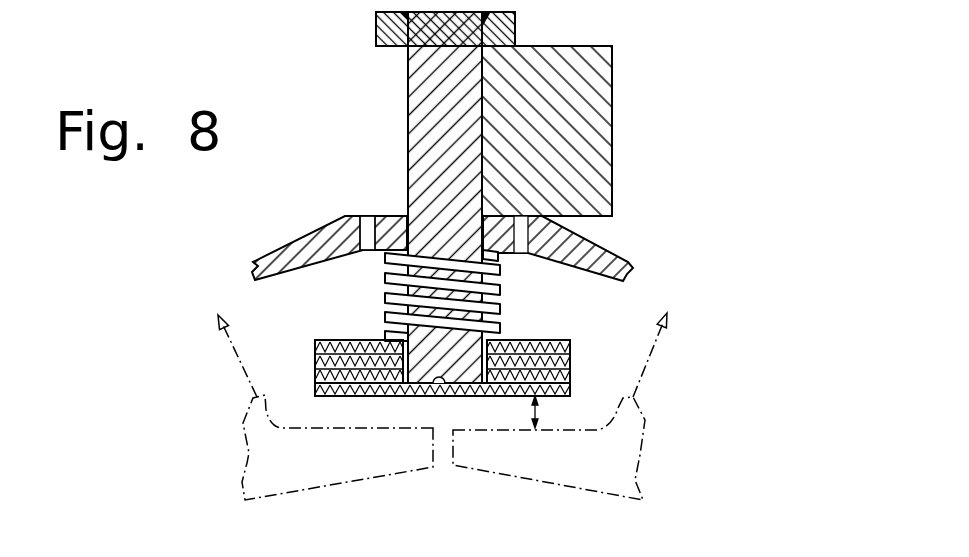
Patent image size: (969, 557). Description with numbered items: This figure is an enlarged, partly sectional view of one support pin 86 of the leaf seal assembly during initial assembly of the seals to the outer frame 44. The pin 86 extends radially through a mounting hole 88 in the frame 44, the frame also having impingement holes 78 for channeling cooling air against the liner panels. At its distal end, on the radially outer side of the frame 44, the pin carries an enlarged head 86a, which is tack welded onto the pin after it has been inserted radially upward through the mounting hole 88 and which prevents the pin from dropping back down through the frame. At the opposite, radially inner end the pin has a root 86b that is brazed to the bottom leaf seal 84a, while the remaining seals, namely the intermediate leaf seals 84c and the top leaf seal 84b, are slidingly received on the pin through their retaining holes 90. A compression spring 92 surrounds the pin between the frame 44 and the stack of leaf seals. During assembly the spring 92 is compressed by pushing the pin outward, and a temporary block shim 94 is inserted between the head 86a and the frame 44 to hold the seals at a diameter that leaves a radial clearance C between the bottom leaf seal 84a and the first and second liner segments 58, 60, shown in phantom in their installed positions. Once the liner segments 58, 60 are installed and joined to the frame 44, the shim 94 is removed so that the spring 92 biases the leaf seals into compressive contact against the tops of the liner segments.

The support pin 86 is at (408, 104).
The enlarged head 86a is at (515, 22).
The root 86b is at (437, 396).
The temporary block shim 94 is at (613, 107).
The impingement holes 78 is at (366, 214).
The mounting hole 88 is at (406, 213).
The outer frame 44 is at (605, 258).
The compression spring 92 is at (386, 278).
The retaining hole 90 is at (506, 340).
The bottom leaf seal 84a is at (572, 390).
The top leaf seal 84b is at (572, 342).
The intermediate leaf seal 84c is at (313, 350).
The radial clearance C is at (538, 412).
The first liner segment 58 is at (317, 490).
The second liner segment 60 is at (560, 488).